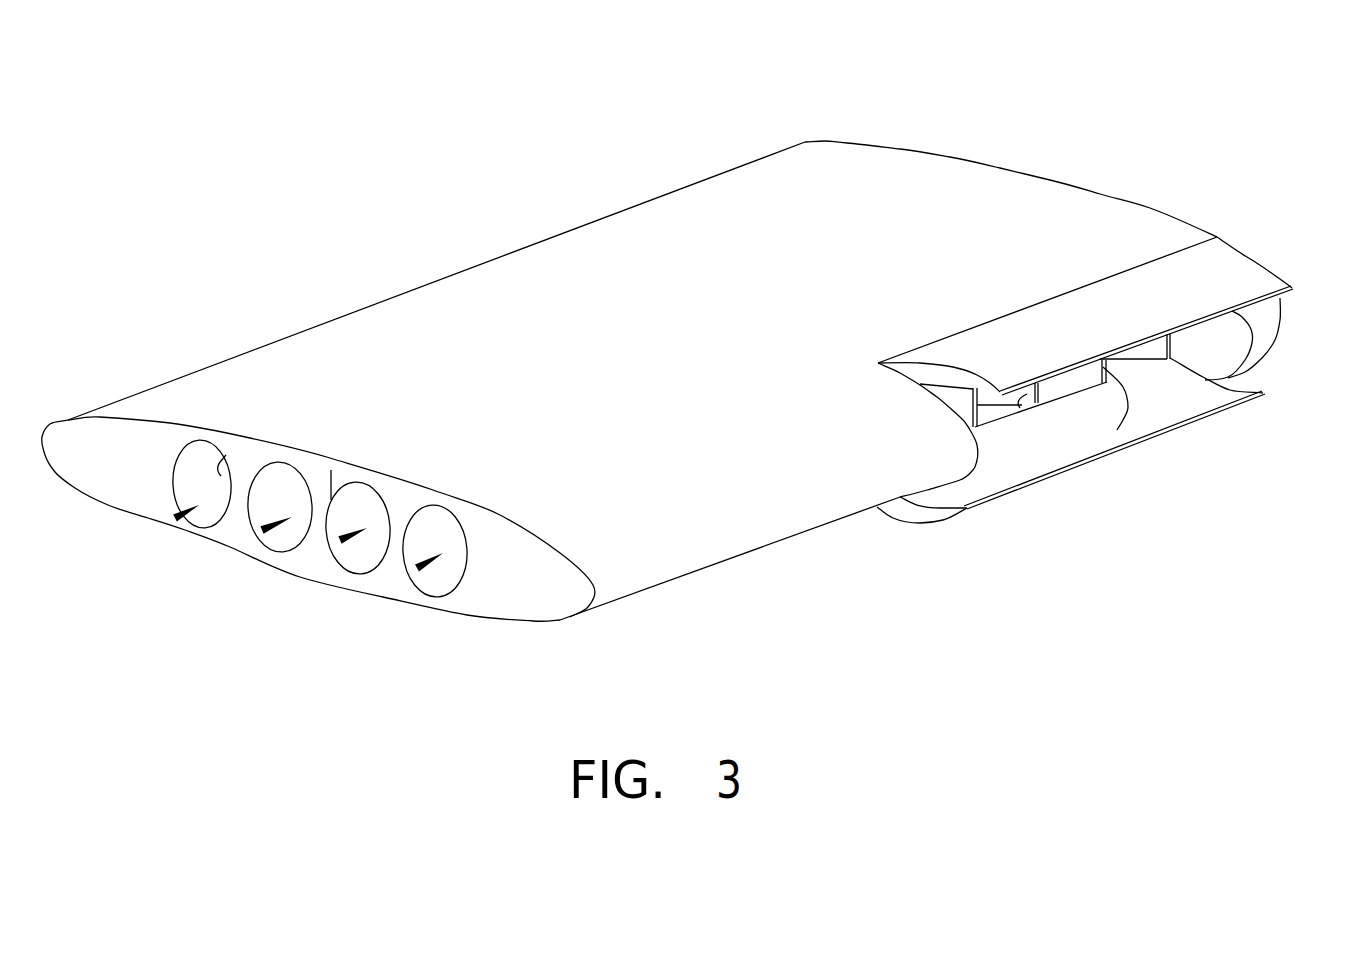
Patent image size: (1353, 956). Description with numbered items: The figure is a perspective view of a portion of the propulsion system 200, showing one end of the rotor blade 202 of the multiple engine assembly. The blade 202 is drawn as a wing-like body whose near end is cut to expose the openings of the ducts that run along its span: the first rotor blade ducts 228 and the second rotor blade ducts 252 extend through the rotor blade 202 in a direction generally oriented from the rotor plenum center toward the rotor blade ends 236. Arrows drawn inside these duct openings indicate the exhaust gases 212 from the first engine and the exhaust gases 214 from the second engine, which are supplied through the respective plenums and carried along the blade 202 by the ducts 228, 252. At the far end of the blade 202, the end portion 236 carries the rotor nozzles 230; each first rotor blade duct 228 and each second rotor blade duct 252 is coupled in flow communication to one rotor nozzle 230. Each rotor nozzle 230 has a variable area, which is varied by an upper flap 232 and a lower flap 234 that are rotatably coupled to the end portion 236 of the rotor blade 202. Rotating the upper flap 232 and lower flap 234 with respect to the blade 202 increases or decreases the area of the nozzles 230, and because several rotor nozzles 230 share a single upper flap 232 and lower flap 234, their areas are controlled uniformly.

The propulsion system 200 is at (170, 112).
The rotor blade 202 is at (592, 248).
The exhaust gases 212 is at (320, 578).
The exhaust gases 214 is at (173, 518).
The first rotor blade duct 228 is at (340, 518).
The rotor nozzle 230 is at (1157, 350).
The upper flap 232 is at (1240, 272).
The lower flap 234 is at (1180, 433).
The end portion of rotor blade 236 is at (951, 275).
The second rotor blade duct 252 is at (231, 477).